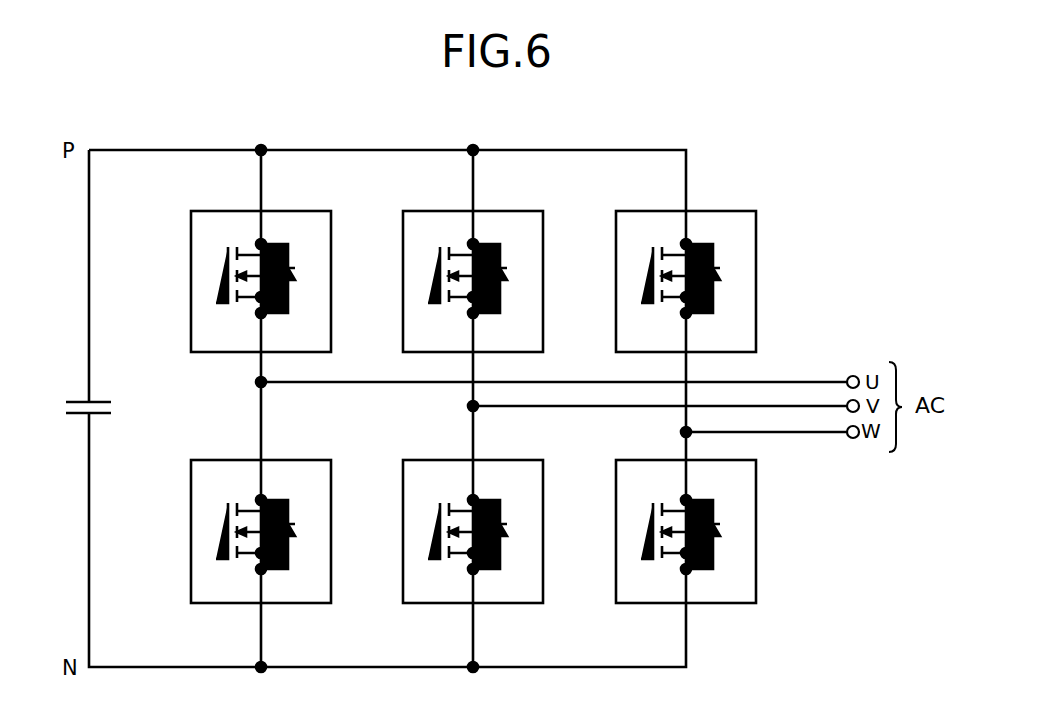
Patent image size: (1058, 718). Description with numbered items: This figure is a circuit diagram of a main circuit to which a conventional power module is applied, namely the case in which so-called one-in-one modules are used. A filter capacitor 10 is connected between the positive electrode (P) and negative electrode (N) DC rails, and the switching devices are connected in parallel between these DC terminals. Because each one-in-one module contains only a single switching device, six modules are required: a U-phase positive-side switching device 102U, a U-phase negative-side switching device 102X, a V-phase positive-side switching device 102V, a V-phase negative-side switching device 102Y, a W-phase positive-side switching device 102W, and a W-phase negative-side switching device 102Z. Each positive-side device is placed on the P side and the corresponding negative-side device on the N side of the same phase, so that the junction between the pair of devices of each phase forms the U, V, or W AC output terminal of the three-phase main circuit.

The filter capacitor 10 is at (78, 402).
The U-phase positive-side switching device 102U is at (313, 211).
The V-phase positive-side switching device 102V is at (525, 211).
The W-phase positive-side switching device 102W is at (738, 211).
The U-phase negative-side switching device 102X is at (313, 603).
The V-phase negative-side switching device 102Y is at (525, 603).
The W-phase negative-side switching device 102Z is at (738, 603).